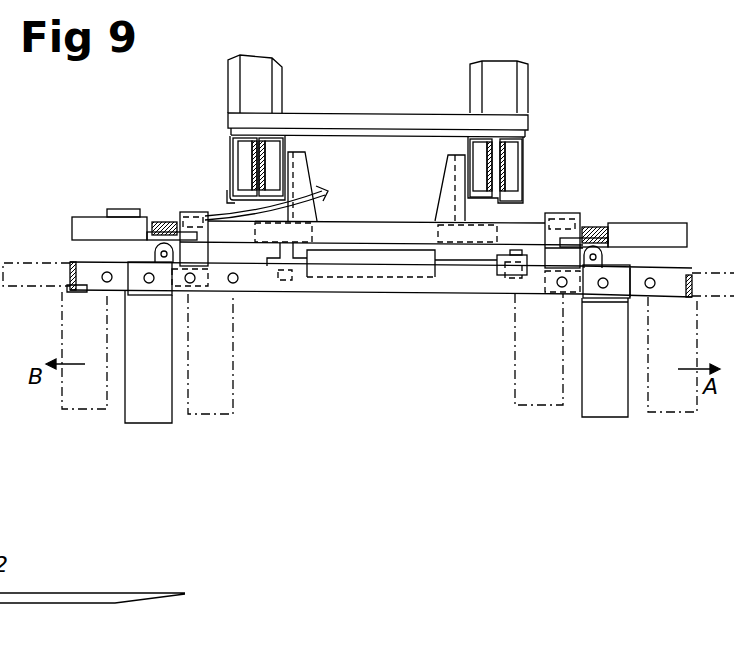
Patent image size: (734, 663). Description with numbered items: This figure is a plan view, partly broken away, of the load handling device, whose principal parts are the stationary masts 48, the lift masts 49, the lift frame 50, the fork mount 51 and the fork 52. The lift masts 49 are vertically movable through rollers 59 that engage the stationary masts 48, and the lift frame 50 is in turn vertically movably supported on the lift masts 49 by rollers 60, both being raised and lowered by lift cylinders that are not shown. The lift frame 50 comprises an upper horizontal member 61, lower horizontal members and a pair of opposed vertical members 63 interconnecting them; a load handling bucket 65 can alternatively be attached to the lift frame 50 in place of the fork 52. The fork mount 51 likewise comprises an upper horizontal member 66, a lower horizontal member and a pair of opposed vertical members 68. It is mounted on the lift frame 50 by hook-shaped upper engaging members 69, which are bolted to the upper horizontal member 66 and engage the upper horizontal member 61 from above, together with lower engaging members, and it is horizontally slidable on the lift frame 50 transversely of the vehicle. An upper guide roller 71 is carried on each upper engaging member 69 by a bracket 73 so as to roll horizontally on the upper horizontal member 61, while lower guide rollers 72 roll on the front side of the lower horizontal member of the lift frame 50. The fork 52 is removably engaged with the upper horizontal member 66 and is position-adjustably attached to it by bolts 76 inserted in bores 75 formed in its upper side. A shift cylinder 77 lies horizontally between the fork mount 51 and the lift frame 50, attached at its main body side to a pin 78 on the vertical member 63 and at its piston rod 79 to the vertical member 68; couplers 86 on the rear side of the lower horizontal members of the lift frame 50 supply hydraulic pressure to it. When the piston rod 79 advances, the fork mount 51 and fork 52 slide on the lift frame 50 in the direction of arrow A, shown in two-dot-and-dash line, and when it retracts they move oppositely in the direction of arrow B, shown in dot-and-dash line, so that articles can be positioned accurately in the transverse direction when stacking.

The lift mast 49 is at (258, 137).
The stationary mast 48 is at (236, 147).
The roller 59 is at (246, 166).
The roller 60 is at (274, 152).
The coupler 86 is at (107, 212).
The upper guide roller 71 is at (158, 223).
The upper engaging member 69 is at (192, 213).
The vertical member 63 is at (318, 232).
The lift frame 50 is at (385, 220).
The load handling bucket 65 is at (503, 224).
The bracket 73 is at (606, 245).
The lower guide roller 72 is at (157, 247).
The bore 75 is at (106, 291).
The bolt 76 is at (149, 291).
The pin 78 is at (290, 245).
The shift cylinder 77 is at (335, 263).
The upper horizontal member 61 is at (372, 233).
The fork mount 51 is at (407, 294).
The upper horizontal member 66 is at (433, 293).
The piston rod 79 is at (478, 263).
The vertical member 68 is at (540, 292).
The fork 52 is at (160, 400).